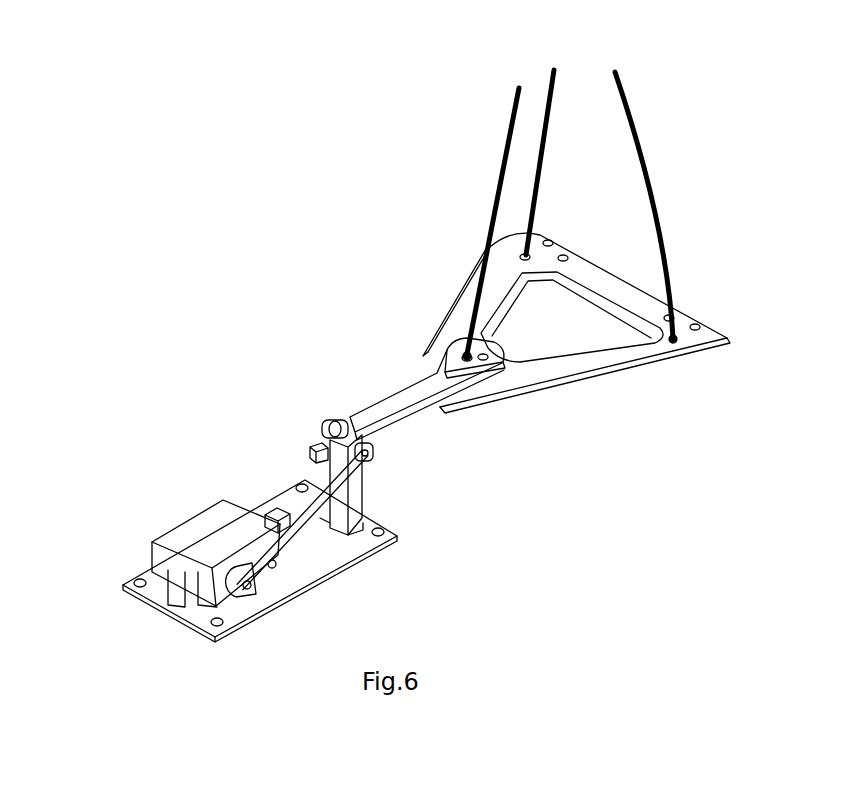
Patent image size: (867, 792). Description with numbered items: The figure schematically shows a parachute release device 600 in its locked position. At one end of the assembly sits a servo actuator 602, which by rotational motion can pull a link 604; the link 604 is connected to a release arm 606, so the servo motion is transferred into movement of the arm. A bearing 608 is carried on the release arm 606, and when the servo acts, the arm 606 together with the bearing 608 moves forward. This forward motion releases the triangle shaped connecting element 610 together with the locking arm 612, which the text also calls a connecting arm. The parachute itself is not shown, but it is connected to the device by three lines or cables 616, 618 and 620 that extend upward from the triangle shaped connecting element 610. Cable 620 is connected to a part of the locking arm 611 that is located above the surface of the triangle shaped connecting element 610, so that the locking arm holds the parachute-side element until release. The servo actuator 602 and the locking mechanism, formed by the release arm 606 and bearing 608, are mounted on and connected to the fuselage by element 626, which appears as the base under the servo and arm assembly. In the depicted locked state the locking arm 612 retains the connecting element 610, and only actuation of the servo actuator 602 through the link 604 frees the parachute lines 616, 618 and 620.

The parachute release device 600 is at (643, 80).
The servo actuator 602 is at (217, 522).
The link 604 is at (322, 430).
The release arm 606 is at (335, 428).
The bearing 608 is at (322, 420).
The triangle shaped connecting element 610 is at (497, 280).
The part of the locking arm 611 is at (466, 348).
The locking arm 612 is at (392, 398).
The line 616 is at (668, 262).
The line 618 is at (540, 173).
The line 620 is at (536, 224).
The element 626 is at (154, 586).